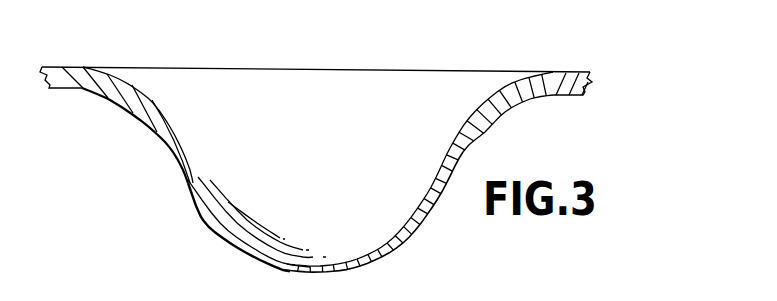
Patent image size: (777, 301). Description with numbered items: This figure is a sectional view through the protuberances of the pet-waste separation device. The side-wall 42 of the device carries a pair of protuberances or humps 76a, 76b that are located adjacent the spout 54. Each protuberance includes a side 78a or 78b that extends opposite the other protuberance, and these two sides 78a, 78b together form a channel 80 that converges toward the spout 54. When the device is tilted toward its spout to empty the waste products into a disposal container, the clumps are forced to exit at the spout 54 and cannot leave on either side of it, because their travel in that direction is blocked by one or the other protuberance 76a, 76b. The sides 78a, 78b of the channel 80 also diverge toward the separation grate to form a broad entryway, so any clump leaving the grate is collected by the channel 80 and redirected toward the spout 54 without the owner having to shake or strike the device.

The side-wall 42 is at (350, 138).
The spout 54 is at (323, 68).
The protuberance 76a is at (490, 97).
The protuberance 76b is at (142, 90).
The side 78a is at (447, 153).
The side 78b is at (186, 152).
The channel 80 is at (313, 230).